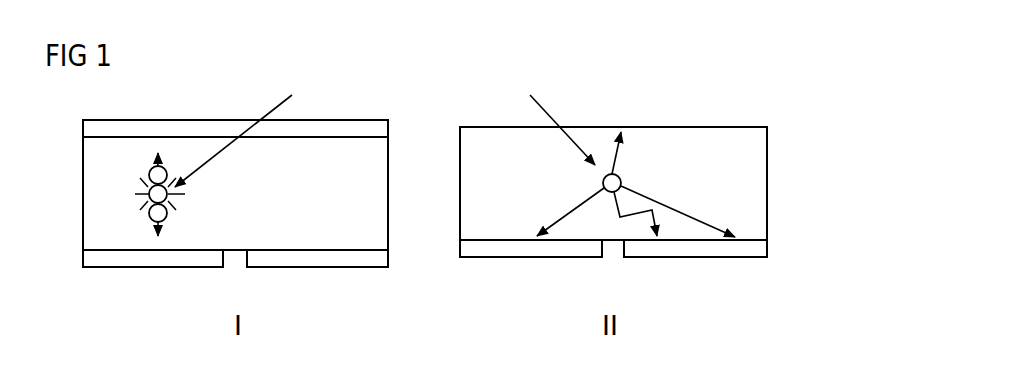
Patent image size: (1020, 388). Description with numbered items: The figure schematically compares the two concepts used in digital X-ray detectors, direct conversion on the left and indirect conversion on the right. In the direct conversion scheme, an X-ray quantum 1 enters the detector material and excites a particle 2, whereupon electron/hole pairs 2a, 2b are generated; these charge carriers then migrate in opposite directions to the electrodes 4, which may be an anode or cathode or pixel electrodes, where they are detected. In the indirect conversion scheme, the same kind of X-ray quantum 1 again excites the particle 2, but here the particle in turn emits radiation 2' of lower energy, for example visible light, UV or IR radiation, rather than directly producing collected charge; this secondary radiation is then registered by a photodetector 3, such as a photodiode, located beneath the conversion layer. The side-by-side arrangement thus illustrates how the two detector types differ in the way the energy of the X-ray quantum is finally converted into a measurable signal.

The X-ray quantum 1 is at (276, 102).
The particle 2 is at (335, 146).
The electron/hole pair 2a is at (148, 172).
The electron/hole pair 2b is at (148, 216).
The radiation 2' is at (639, 158).
The photodetector 3 is at (532, 248).
The electrode 4 is at (326, 125).